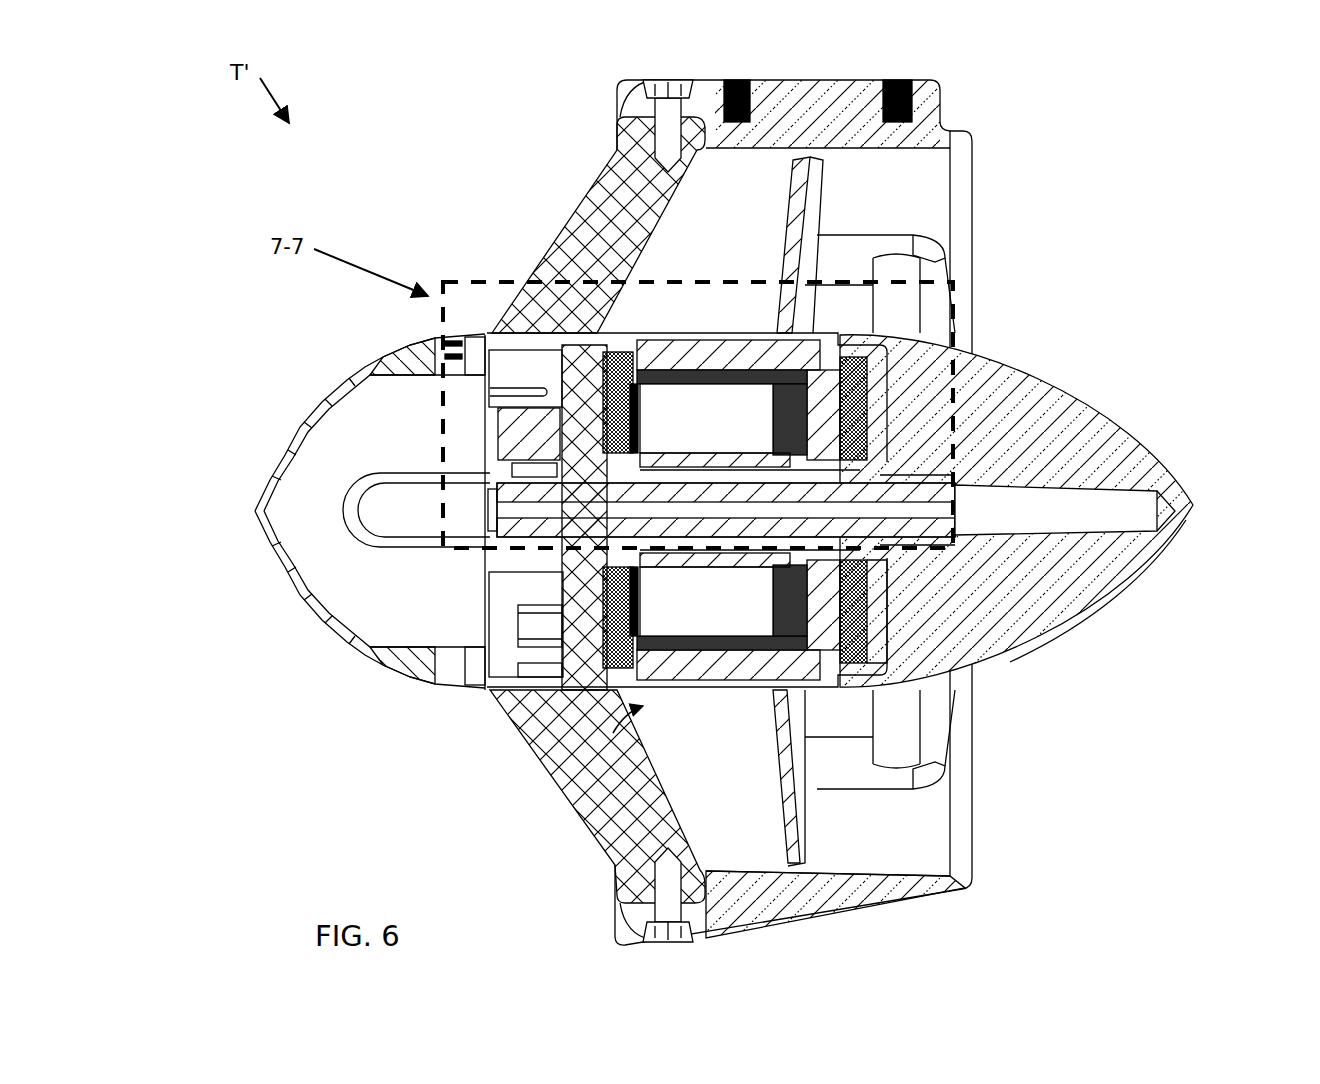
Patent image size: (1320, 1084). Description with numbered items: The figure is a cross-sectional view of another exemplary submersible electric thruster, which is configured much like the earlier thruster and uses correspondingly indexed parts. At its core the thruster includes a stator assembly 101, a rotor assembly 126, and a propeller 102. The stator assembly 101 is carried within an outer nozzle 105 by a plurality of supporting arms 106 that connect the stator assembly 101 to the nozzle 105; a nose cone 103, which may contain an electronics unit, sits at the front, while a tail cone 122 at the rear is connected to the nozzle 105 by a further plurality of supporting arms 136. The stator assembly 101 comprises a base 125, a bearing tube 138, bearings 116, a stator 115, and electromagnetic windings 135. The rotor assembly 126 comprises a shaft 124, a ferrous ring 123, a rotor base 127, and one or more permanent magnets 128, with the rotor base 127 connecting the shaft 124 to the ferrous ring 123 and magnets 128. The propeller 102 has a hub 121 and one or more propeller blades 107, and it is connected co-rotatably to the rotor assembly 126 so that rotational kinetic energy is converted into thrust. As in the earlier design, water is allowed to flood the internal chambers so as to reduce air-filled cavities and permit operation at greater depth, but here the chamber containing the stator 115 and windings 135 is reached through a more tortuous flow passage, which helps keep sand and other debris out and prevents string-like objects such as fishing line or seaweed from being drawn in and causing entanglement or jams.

The stator assembly 101 is at (518, 592).
The propeller 102 is at (590, 700).
The nose cone 103 is at (300, 420).
The nozzle 105 is at (910, 196).
The supporting arms 106 is at (578, 248).
The propeller blades 107 is at (795, 190).
The stator 115 is at (690, 395).
The bearings 116 is at (520, 548).
The hub 121 is at (730, 335).
The tail cone 122 is at (1115, 455).
The ferrous ring 123 is at (720, 678).
The shaft 124 is at (943, 485).
The base 125 is at (588, 612).
The rotor assembly 126 is at (878, 590).
The rotor base 127 is at (878, 645).
The permanent magnets 128 is at (758, 658).
The electromagnetic windings 135 is at (615, 360).
The supporting arms 136 is at (905, 312).
The bearing tube 138 is at (552, 462).